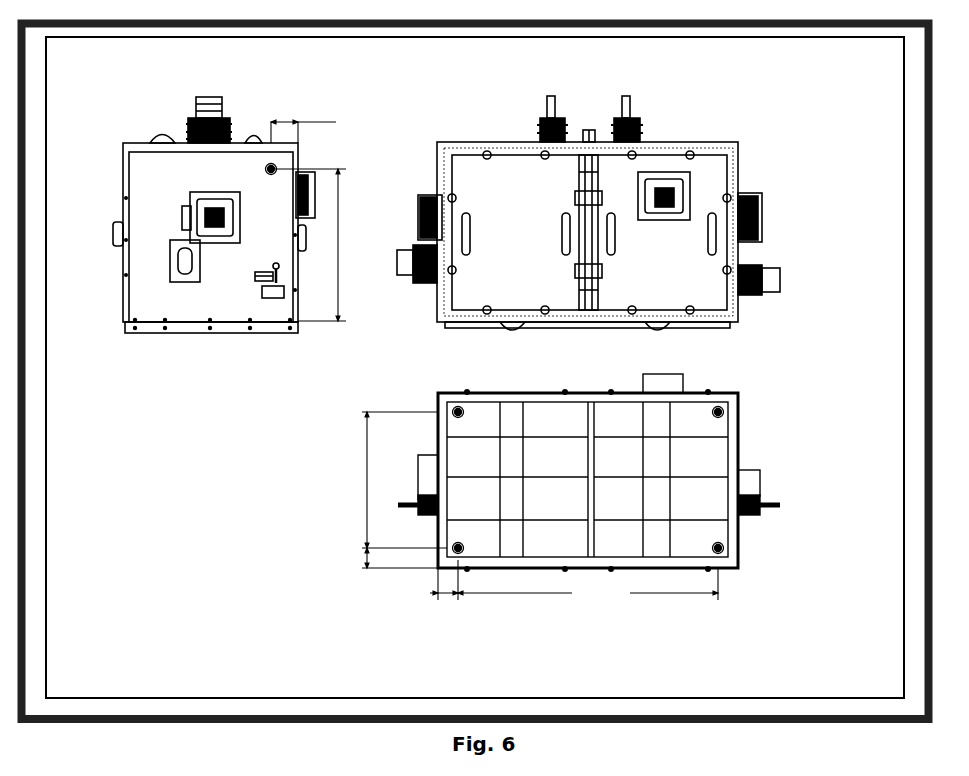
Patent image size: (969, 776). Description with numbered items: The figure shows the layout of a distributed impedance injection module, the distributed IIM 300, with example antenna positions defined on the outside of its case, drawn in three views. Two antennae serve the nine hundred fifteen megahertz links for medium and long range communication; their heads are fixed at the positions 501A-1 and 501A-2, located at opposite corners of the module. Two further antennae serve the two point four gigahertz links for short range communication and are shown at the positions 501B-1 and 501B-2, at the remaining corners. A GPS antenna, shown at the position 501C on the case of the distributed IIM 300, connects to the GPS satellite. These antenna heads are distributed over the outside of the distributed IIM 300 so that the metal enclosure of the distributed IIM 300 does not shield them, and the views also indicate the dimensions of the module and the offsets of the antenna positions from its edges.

The distributed IIM 300 is at (133, 163).
The GPS antenna position 501C is at (271, 166).
The 915 MHz antenna position 501A-2 is at (457, 408).
The 2.4 GHz antenna position 501B-1 is at (719, 409).
The 915 MHz antenna position 501A-1 is at (719, 551).
The 2.4 GHz antenna position 501B-2 is at (459, 551).